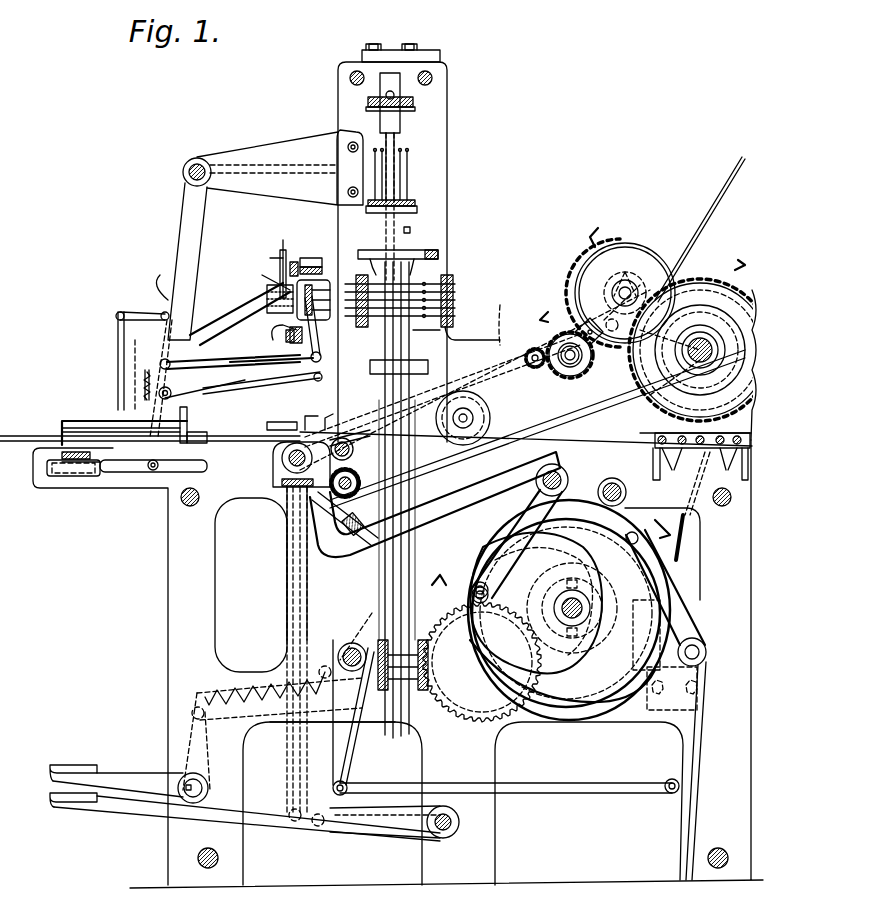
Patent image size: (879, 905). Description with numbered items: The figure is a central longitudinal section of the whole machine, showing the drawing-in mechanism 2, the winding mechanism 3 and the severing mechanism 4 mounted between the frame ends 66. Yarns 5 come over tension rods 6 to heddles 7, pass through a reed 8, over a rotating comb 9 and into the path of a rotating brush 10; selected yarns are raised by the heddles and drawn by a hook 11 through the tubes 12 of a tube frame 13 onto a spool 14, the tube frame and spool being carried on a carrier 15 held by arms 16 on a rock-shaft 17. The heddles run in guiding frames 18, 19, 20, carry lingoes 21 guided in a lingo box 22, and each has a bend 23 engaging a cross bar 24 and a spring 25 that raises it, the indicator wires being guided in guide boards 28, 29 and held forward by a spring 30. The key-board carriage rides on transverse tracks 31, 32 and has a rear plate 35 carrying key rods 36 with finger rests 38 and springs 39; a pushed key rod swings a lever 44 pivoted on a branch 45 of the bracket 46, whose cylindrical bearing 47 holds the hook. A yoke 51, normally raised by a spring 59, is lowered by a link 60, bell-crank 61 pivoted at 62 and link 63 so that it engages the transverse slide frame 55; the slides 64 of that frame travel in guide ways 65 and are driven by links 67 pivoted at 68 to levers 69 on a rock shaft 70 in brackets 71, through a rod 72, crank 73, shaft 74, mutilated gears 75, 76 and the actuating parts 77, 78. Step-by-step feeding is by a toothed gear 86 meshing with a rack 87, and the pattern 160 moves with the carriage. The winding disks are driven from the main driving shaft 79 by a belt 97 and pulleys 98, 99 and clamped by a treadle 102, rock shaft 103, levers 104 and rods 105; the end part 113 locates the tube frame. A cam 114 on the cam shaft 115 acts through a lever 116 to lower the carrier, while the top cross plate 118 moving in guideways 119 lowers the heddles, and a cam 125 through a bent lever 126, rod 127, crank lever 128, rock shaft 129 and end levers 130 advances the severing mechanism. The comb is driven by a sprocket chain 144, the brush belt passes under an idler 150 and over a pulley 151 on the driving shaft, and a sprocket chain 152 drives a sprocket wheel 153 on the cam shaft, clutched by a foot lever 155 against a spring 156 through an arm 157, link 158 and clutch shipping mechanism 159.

The drawing-in mechanism 2 is at (90, 425).
The winding mechanism 3 is at (275, 463).
The severing mechanism 4 is at (345, 520).
The yarns 5 is at (568, 425).
The tension rods 6 is at (695, 457).
The heddles 7 is at (426, 324).
The reed 8 is at (350, 427).
The rotating comb 9 is at (350, 440).
The rotating straightener or brush 10 is at (343, 498).
The hook 11 is at (237, 430).
The tubes 12 is at (330, 414).
The tube frame 13 is at (310, 416).
The spool 14 is at (282, 487).
The carrier 15 is at (295, 500).
The arms 16 is at (332, 560).
The rock-shaft 17 is at (566, 470).
The guiding frame 18 is at (428, 362).
The guiding frame 19 is at (438, 253).
The guiding frame 20 is at (416, 205).
The weights or lingoes 21 is at (412, 730).
The lingo box 22 is at (428, 700).
The offset finger or bend 23 is at (410, 230).
The cross bar 24 is at (395, 262).
The spring 25 is at (410, 148).
The guide board 28 is at (360, 275).
The guide board 29 is at (453, 322).
The spring 30 is at (453, 282).
The transverse track 31 is at (283, 262).
The transverse track 32 is at (283, 325).
The rear plate 35 is at (332, 282).
The key rods 36 is at (330, 322).
The enlarged head or finger rest 38 is at (275, 300).
The spring 39 is at (285, 280).
The lever 44 is at (322, 355).
The branch 45 is at (250, 382).
The arm or heavy bracket 46 is at (230, 325).
The long cylindrical bearing 47 is at (110, 410).
The yoke 51 is at (70, 410).
The transverse slide frame 55 is at (60, 460).
The spring 59 is at (137, 370).
The link 60 is at (118, 345).
The bell-crank 61 is at (138, 310).
The pivot 62 is at (155, 278).
The link 63 is at (220, 362).
The slides 64 is at (50, 475).
The guide ways 65 is at (120, 475).
The frame ends 66 is at (168, 600).
The links 67 is at (100, 470).
The pivot 68 is at (152, 472).
The levers 69 is at (197, 217).
The rock shaft 70 is at (183, 163).
The brackets 71 is at (273, 150).
The rod 72 is at (250, 386).
The crank 73 is at (533, 366).
The shaft 74 is at (565, 330).
The mutilated gear 75 is at (560, 370).
The mutilated gear 76 is at (632, 242).
The actuating part 77 is at (628, 280).
The actuating part 78 is at (703, 282).
The link 79 is at (655, 398).
The toothed gear 86 is at (312, 258).
The rack 87 is at (290, 250).
The belt 97 is at (517, 315).
The pulley 98 is at (272, 452).
The pulley 99 is at (712, 290).
The treadle 102 is at (76, 802).
The rock shaft 103 is at (460, 830).
The levers 104 is at (322, 828).
The rods 105 is at (295, 762).
The end part 113 is at (280, 422).
The cam 114 is at (555, 690).
The cam shaft 115 is at (565, 600).
The lever 116 is at (505, 582).
The top cross plate 118 is at (415, 104).
The guideways 119 is at (412, 56).
The cam 125 is at (620, 520).
The bent lever 126 is at (690, 612).
The rod 127 is at (527, 793).
The crank lever 128 is at (345, 762).
The rock shaft 129 is at (338, 650).
The end levers 130 is at (368, 612).
The sprocket chain 144 is at (412, 497).
The idler 150 is at (468, 400).
The pulley 151 is at (640, 388).
The sprocket chain 152 is at (680, 545).
The sprocket wheel 153 is at (615, 700).
The foot lever 155 is at (80, 770).
The spring 156 is at (218, 690).
The arm 157 is at (210, 737).
The link 158 is at (248, 700).
The clutch shipping mechanism 159 is at (660, 625).
The pattern 160 is at (283, 255).